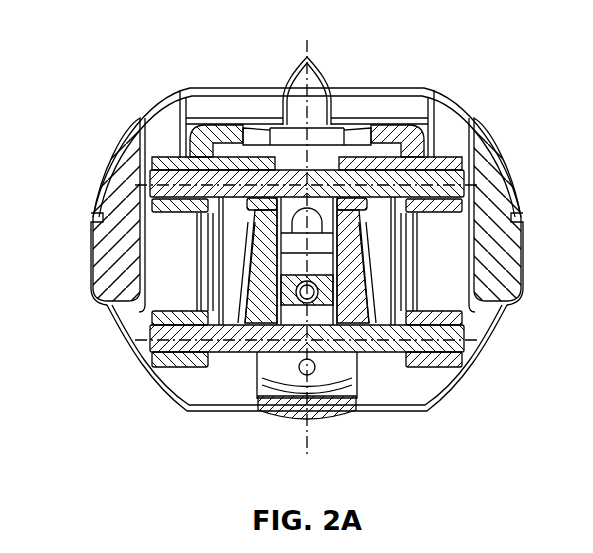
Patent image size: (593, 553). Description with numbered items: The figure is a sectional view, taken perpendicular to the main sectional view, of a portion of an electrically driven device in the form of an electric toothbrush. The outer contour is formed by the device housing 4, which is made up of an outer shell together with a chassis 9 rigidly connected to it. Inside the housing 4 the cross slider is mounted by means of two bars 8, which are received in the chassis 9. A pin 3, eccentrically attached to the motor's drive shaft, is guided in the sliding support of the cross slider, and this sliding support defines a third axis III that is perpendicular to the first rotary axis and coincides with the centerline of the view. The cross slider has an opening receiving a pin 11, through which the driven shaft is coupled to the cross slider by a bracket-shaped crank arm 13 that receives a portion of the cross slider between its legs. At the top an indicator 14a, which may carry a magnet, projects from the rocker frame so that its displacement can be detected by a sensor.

The pin 3 is at (298, 284).
The device housing 4 is at (108, 235).
The bars 8 is at (447, 180).
The chassis 9 is at (187, 162).
The pin 11 is at (268, 360).
The crank arm 13 is at (320, 417).
The indicator 14a is at (302, 90).
The third axis III is at (308, 42).